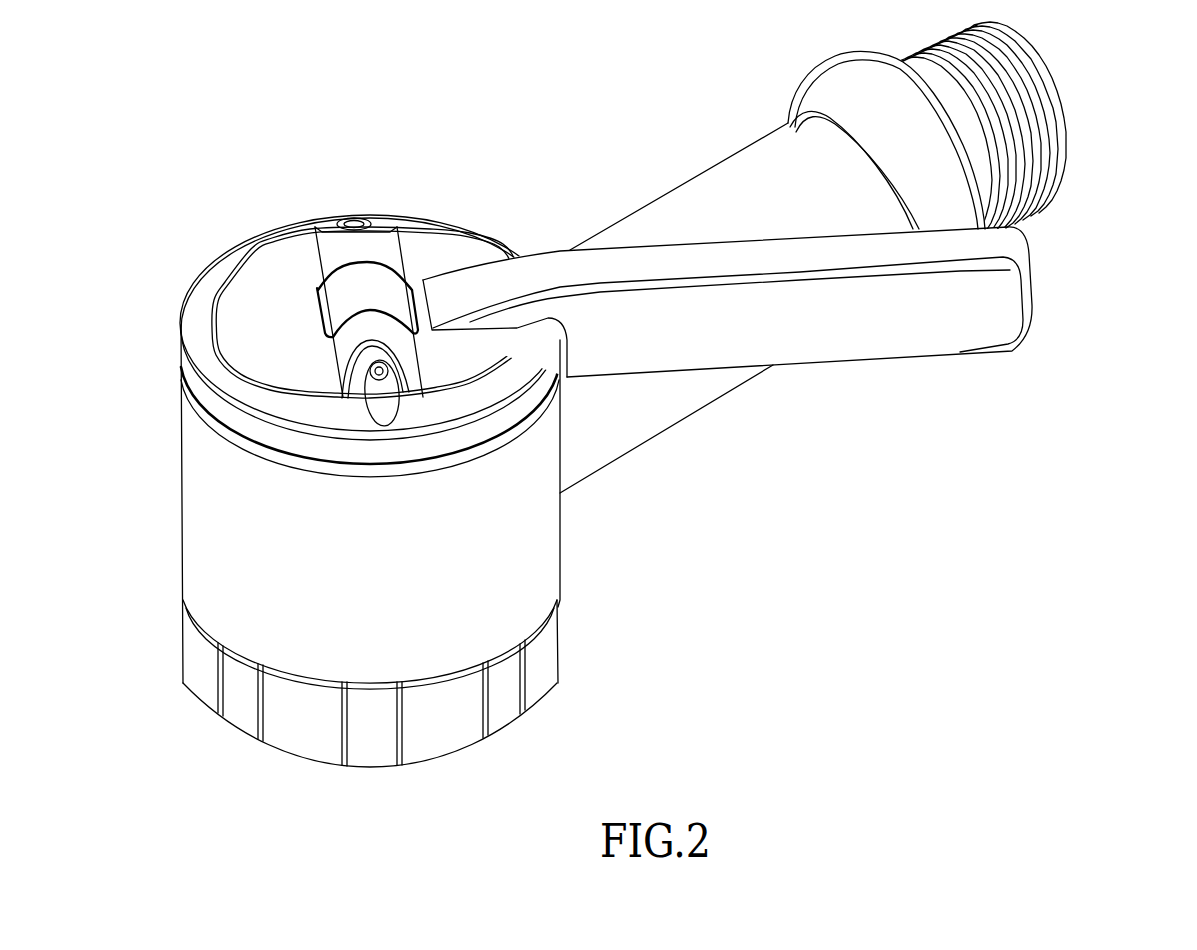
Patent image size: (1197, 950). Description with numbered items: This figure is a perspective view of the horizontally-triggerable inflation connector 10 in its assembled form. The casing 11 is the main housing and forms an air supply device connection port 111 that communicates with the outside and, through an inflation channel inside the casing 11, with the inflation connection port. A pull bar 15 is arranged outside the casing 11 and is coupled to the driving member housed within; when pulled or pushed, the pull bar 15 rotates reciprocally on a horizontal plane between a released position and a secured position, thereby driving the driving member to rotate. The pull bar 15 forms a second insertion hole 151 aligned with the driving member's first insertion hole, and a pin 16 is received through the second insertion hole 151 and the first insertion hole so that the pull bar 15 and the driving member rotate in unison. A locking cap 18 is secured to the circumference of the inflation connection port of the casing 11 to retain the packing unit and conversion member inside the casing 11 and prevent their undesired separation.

The horizontally-triggerable inflation connector 10 is at (148, 190).
The casing 11 is at (203, 528).
The air supply device connection port 111 is at (1063, 107).
The pull bar 15 is at (853, 340).
The second insertion hole 151 is at (352, 216).
The pin 16 is at (378, 370).
The locking cap 18 is at (553, 652).